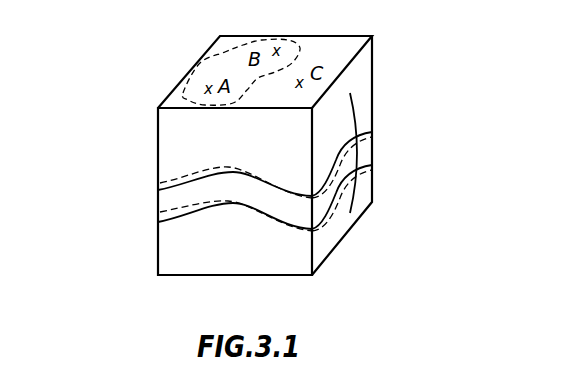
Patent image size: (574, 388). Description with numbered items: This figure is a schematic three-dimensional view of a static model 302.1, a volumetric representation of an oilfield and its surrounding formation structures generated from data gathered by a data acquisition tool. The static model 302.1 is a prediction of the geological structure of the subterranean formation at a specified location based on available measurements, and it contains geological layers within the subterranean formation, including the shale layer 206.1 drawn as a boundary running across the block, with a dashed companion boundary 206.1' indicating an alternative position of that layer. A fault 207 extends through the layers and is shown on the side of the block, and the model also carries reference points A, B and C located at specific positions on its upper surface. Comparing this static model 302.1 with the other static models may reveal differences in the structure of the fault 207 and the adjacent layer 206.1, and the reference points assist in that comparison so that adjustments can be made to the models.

The static model 302.1 is at (198, 58).
The fault 207 is at (355, 105).
The shale layer 206.1 is at (212, 181).
The shifted layer boundary (dashed) 206.1' is at (212, 184).